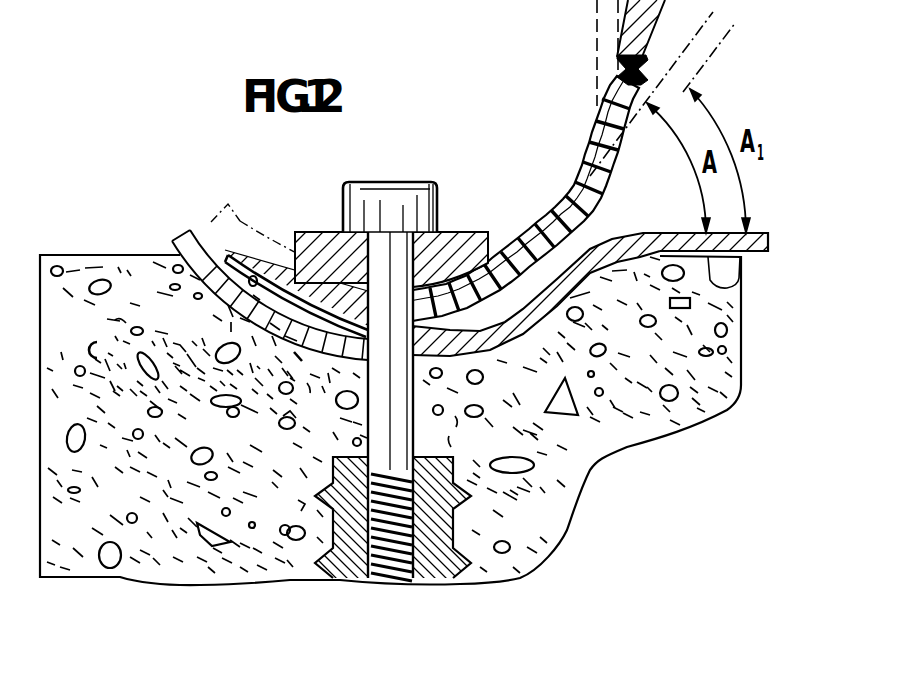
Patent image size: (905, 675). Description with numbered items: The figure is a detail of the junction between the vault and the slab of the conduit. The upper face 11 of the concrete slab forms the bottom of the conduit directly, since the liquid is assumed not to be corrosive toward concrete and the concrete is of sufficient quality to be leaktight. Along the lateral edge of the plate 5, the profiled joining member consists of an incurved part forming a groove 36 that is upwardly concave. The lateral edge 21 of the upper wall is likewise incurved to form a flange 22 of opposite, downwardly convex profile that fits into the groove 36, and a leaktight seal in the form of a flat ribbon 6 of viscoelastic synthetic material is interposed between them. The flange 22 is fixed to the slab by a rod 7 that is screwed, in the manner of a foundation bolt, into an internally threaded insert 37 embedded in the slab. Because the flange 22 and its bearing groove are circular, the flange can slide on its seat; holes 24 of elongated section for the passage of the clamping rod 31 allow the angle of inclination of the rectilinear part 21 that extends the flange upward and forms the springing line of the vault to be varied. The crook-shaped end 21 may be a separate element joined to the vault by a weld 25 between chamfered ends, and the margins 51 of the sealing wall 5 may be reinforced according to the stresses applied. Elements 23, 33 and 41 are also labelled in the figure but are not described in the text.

The plate 5 is at (671, 232).
The flat ribbon 6 is at (600, 222).
The rod 7 is at (393, 427).
The upper face of the slab 11 is at (737, 285).
The lateral edge of the upper wall 21 is at (607, 104).
The flange 22 is at (506, 252).
The reinforcing insert strip 23 is at (288, 266).
The holes of elongated section 24 is at (432, 294).
The weld 25 is at (617, 60).
The clamping rod 31 is at (454, 232).
The bolt head edge 33 is at (343, 210).
The groove 36 is at (200, 293).
The insert 37 is at (447, 512).
The sealing strip portion 41 is at (222, 0).
The margins of the sealing wall 51 is at (176, 235).